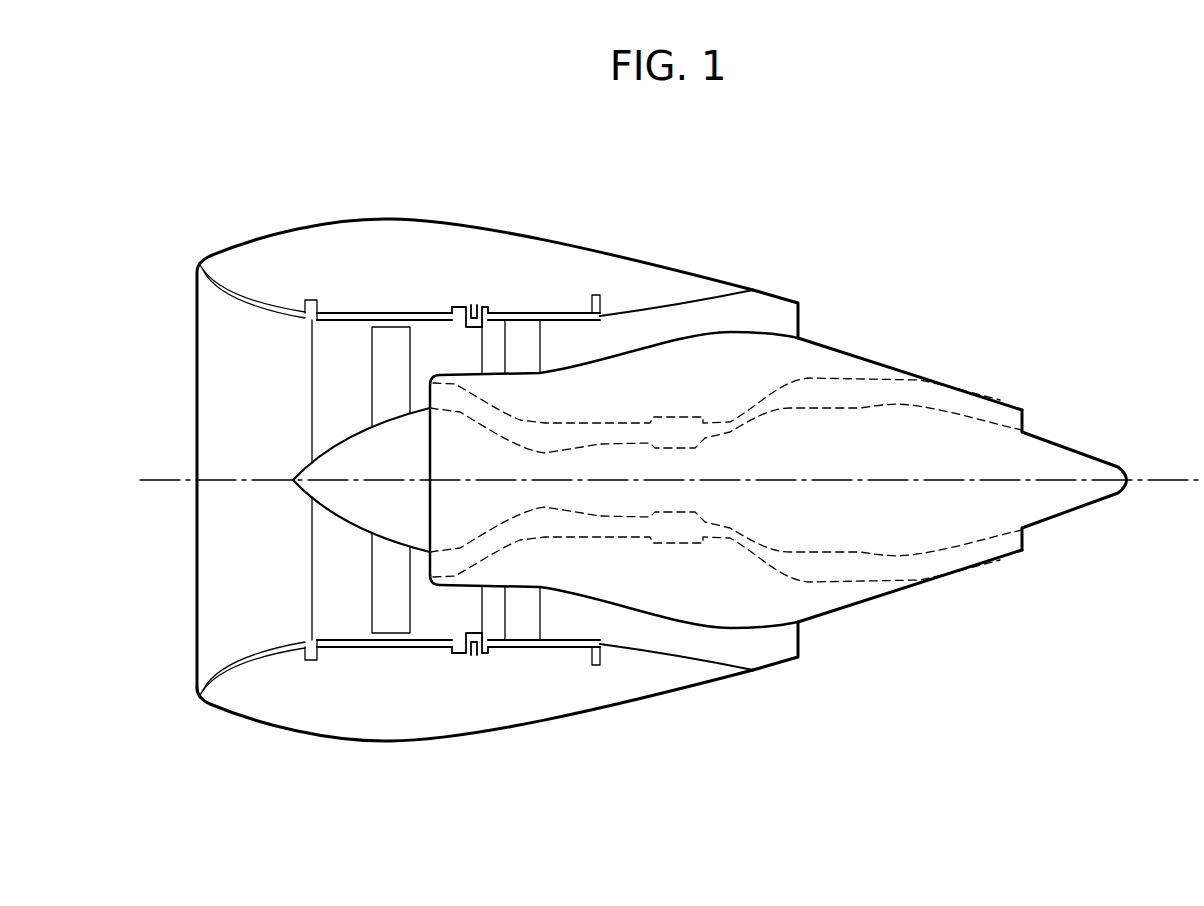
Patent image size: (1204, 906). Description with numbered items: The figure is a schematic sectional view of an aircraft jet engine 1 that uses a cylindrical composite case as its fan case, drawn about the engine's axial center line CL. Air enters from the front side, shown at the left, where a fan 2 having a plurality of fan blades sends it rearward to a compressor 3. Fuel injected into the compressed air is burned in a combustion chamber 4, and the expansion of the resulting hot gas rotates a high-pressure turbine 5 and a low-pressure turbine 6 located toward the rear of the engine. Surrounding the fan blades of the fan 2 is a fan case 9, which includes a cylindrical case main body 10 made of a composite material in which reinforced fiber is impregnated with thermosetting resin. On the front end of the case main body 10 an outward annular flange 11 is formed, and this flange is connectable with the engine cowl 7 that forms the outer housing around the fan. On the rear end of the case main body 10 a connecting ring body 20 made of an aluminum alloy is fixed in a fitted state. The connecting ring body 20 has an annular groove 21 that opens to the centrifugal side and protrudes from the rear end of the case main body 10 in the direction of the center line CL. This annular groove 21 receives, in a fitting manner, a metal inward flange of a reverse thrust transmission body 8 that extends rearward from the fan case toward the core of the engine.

The aircraft jet engine 1 is at (857, 266).
The fan 2 is at (357, 550).
The compressor 3 is at (545, 522).
The combustion chamber 4 is at (690, 532).
The high-pressure turbine 5 is at (748, 540).
The low-pressure turbine 6 is at (862, 565).
The engine cowl 7 is at (240, 297).
The reverse thrust transmission body 8 is at (560, 307).
The fan case 9 is at (418, 313).
The case main body 10 is at (377, 313).
The outward annular flange 11 is at (328, 303).
The connecting ring body 20 is at (458, 308).
The annular groove 21 is at (473, 313).
The axial direction CL is at (1165, 478).